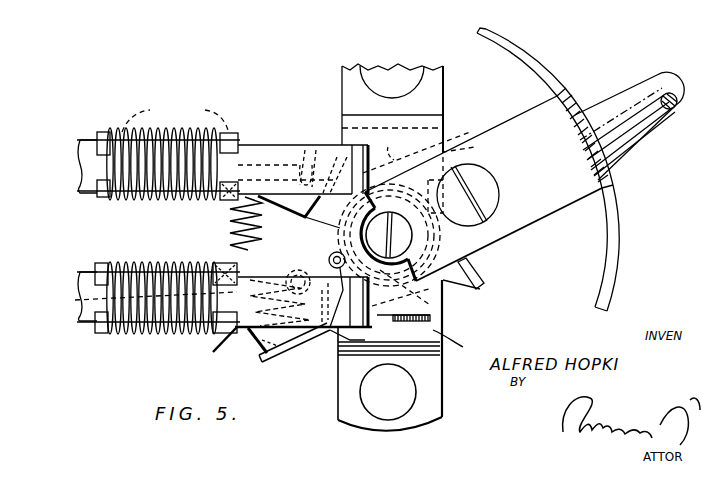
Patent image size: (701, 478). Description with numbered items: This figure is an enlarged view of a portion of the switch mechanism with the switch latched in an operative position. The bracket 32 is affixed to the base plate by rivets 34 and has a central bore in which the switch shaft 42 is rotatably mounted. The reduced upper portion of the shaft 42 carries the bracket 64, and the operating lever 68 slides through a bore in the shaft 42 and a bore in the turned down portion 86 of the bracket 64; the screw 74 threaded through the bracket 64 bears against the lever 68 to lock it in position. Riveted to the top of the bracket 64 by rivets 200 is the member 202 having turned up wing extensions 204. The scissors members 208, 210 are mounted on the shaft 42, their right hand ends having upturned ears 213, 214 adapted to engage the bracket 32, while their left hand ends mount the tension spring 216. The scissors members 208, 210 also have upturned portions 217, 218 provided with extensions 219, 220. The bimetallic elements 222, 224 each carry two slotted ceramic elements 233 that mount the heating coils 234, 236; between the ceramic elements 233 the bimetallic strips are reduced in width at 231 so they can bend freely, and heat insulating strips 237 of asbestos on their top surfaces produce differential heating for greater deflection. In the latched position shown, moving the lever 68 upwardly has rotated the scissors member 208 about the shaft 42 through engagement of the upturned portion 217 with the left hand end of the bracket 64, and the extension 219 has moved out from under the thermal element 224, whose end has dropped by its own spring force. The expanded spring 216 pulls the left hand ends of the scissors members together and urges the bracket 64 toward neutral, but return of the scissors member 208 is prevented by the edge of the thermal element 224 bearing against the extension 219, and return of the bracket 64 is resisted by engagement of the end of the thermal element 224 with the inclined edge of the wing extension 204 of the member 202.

The bracket 32 is at (445, 115).
The rivets 34 is at (370, 404).
The switch shaft 42 is at (430, 235).
The bracket 64 is at (565, 160).
The operating lever 68 is at (630, 132).
The screw 74 is at (493, 204).
The turned down portion 86 is at (527, 62).
The rivets 200 is at (290, 298).
The member 202 is at (329, 256).
The turned up wing extensions 204 is at (385, 340).
The scissors member 208 is at (470, 300).
The scissors member 210 is at (416, 152).
The upturned ear 213 is at (478, 278).
The upturned ear 214 is at (466, 176).
The tension spring 216 is at (232, 240).
The upturned portion 217 is at (300, 358).
The upturned portion 218 is at (299, 212).
The extension 219 is at (322, 345).
The extension 220 is at (306, 150).
The bimetallic element 222 is at (90, 138).
The bimetallic element 224 is at (86, 271).
The reduced width portion 231 is at (138, 204).
The slotted elements 233 is at (232, 133).
The heating coil 234 is at (160, 205).
The heating coil 236 is at (138, 244).
The heat insulating strips 237 is at (248, 165).